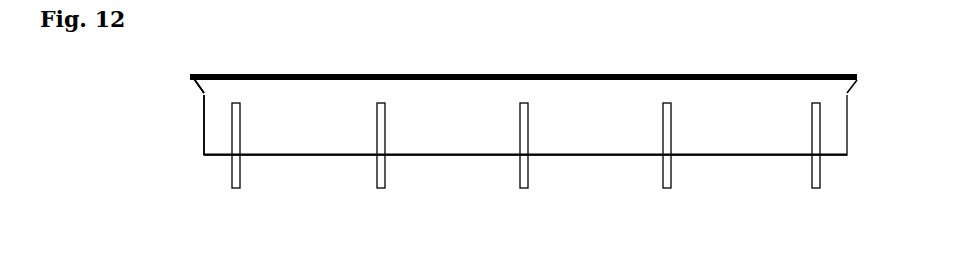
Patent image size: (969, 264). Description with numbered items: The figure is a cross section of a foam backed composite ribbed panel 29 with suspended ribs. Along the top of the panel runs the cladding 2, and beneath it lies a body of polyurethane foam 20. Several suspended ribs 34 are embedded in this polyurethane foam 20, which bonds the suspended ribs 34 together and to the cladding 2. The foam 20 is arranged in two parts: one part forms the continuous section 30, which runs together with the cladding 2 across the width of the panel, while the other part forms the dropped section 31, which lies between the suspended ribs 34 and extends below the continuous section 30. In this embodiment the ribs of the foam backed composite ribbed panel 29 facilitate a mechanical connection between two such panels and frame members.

The cladding 2 is at (515, 73).
The polyurethane foam 20 is at (635, 117).
The foam backed composite ribbed panel 29 is at (183, 71).
The continuous section 30 is at (235, 93).
The dropped section 31 is at (223, 133).
The suspended ribs 34 is at (375, 172).